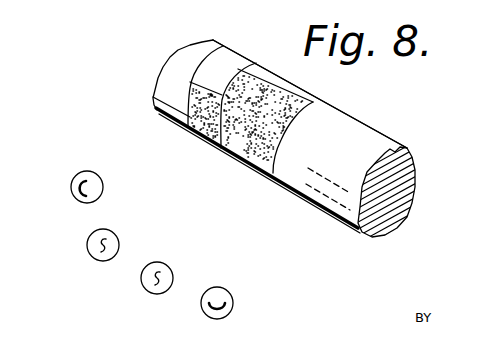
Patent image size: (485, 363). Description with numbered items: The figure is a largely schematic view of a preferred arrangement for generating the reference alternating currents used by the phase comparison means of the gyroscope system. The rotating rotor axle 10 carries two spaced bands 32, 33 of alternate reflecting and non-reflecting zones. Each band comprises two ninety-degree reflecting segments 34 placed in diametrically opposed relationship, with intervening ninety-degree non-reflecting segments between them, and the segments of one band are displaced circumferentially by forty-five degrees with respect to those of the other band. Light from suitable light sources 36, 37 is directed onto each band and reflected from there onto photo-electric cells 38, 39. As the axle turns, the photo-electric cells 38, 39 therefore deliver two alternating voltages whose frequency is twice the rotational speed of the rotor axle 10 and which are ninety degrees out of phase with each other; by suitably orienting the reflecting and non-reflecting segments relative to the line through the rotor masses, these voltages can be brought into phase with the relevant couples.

The rotor axle 10 is at (365, 133).
The band 32 is at (256, 61).
The band 33 is at (308, 84).
The reflecting segment 34 is at (237, 61).
The light source 36 is at (200, 134).
The light source 37 is at (251, 164).
The photo-electric cell 38 is at (202, 128).
The photo-electric cell 39 is at (255, 167).